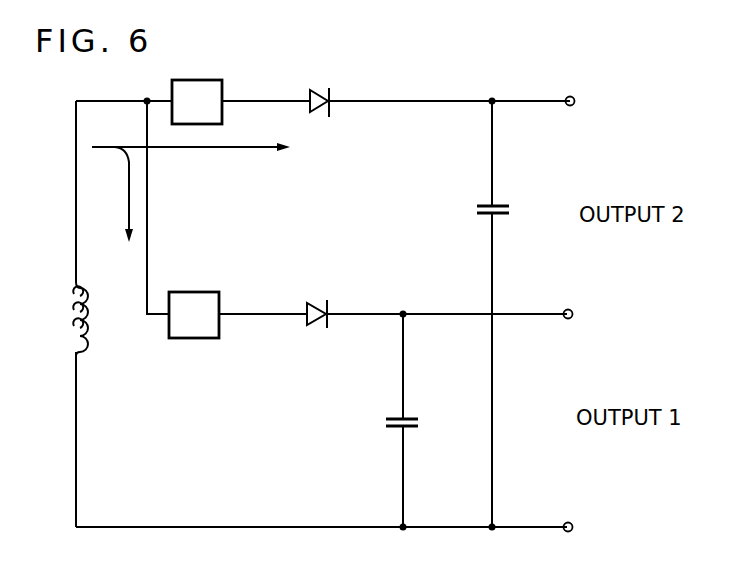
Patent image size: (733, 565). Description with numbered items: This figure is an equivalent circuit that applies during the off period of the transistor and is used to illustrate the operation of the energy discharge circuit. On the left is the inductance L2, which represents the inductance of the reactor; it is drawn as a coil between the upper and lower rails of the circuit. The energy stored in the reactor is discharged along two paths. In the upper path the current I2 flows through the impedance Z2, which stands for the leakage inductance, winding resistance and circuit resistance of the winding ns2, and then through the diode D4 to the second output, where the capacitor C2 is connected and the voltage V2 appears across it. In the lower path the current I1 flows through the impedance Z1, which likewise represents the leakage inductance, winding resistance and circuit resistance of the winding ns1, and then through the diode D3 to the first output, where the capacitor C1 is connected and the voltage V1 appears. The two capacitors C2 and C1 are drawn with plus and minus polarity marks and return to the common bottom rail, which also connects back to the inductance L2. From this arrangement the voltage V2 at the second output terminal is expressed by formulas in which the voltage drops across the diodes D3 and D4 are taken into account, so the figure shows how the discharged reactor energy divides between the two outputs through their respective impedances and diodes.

The inductance of the reactor L2 is at (78, 320).
The impedance Z2 is at (197, 102).
The impedance Z1 is at (194, 315).
The diode D4 is at (320, 95).
The diode D3 is at (312, 322).
The capacitor C2 is at (509, 213).
The capacitor C1 is at (418, 423).
The voltage at the output terminal V2 is at (479, 226).
The voltage at the output terminal V1 is at (392, 440).
The current I2 is at (191, 166).
The current I1 is at (127, 214).